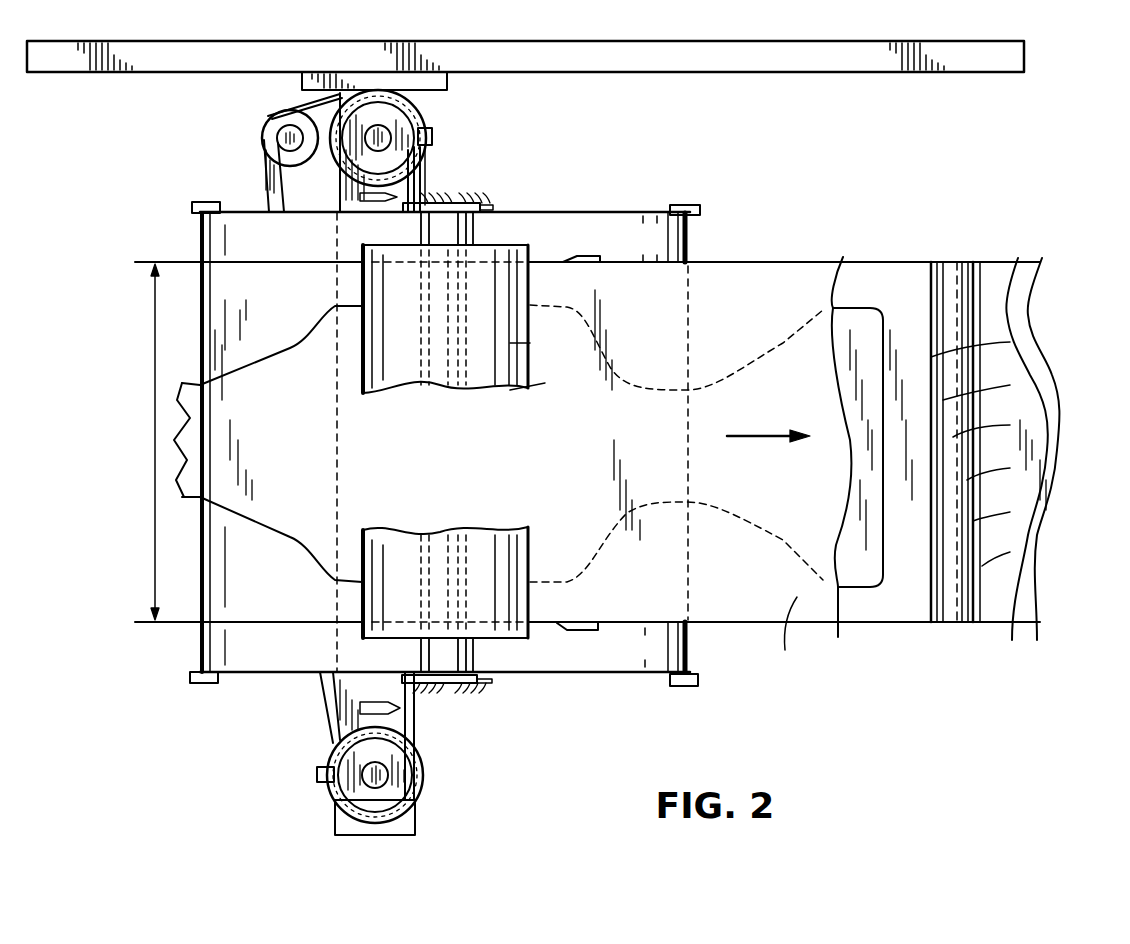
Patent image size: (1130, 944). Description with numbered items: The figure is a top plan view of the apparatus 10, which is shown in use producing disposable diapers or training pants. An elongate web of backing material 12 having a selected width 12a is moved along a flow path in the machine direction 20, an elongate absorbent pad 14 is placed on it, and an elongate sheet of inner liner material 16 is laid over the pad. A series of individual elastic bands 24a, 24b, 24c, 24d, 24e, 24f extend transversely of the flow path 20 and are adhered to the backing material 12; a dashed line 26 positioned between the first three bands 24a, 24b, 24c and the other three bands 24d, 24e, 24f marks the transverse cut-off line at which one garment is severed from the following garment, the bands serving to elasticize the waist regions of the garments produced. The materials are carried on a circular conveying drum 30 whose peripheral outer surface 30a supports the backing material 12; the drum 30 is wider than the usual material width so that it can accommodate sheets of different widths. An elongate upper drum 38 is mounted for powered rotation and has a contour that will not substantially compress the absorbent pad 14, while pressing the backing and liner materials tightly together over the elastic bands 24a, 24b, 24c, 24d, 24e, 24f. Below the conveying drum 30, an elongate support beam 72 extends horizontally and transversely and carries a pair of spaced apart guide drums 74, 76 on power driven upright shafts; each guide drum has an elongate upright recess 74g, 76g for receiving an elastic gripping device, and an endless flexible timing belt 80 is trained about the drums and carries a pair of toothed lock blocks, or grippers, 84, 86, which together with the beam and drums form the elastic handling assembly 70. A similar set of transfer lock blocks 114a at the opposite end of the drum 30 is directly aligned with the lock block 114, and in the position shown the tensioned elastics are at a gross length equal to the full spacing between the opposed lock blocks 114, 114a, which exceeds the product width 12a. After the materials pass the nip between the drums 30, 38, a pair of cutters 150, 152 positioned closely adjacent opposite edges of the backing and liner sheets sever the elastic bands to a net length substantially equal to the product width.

The apparatus 10 is at (370, 401).
The backing material 12 is at (308, 262).
The width of the backing and liner sheets 12a is at (150, 418).
The absorbent pad 14 is at (238, 390).
The inner liner material 16 is at (783, 637).
The flow path direction 20 is at (768, 435).
The elastic band 24a is at (1010, 343).
The elastic band 24b is at (1010, 383).
The elastic band 24c is at (1010, 427).
The elastic band 24d is at (1010, 468).
The elastic band 24e is at (1010, 510).
The elastic band 24f is at (1010, 550).
The dashed line 26 is at (957, 317).
The conveying drum 30 is at (612, 212).
The peripheral outer surface of the drum 30a is at (200, 241).
The upper drum 38 is at (530, 344).
The drive assembly 70 is at (327, 753).
The support beam 72 is at (412, 828).
The guide drum 74 is at (427, 110).
The upright recess 74g is at (434, 136).
The guide drum 76 is at (425, 776).
The upright recess 76g is at (320, 787).
The timing belt 80 is at (263, 181).
The lock block 84 is at (432, 140).
The lock block 86 is at (317, 773).
The lock block 114 is at (490, 687).
The transfer lock block 114a is at (487, 200).
The cutter 150 is at (562, 260).
The cutter 152 is at (588, 632).